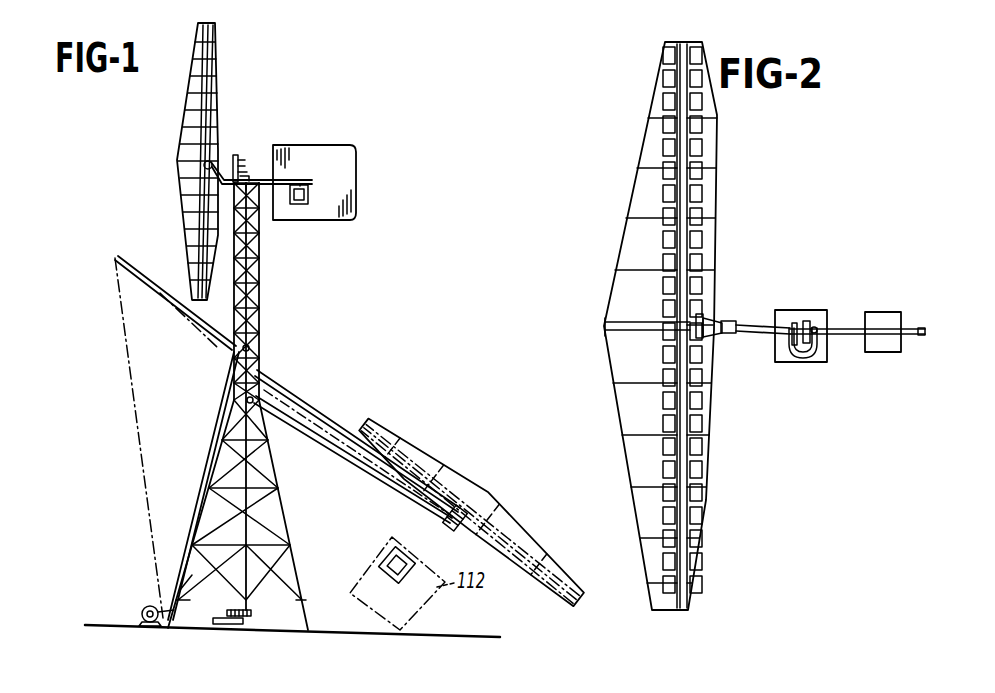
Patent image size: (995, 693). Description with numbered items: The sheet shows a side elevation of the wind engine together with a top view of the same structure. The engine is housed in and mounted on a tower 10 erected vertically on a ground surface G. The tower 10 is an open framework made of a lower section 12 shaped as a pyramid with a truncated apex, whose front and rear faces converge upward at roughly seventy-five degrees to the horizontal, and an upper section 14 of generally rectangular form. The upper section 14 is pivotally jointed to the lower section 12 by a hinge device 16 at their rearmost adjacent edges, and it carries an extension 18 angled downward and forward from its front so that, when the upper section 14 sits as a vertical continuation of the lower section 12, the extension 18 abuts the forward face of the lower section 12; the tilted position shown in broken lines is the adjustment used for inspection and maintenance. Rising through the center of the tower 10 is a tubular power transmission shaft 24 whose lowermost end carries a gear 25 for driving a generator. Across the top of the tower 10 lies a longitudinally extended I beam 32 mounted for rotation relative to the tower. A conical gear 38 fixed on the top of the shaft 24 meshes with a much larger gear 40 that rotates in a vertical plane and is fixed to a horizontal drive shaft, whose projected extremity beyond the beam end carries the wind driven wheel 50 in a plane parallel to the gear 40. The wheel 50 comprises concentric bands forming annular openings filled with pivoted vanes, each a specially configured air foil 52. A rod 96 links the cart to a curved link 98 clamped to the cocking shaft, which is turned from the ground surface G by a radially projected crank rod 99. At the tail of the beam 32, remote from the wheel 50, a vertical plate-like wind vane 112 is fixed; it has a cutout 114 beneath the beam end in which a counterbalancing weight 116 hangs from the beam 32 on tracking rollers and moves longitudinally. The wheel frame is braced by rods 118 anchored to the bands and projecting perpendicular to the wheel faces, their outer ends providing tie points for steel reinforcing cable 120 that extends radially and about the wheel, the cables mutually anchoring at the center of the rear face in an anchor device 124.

In FIG. 1, the tower 10 is at (257, 331).
In FIG. 1, the lower section 12 is at (278, 498).
In FIG. 1, the upper section 14 is at (260, 270).
In FIG. 2, the upper section 14 is at (780, 310).
In FIG. 1, the hinge device 16 is at (262, 400).
In FIG. 1, the extension 18 is at (182, 330).
In FIG. 1, the tubular power transmission shaft 24 is at (260, 348).
In FIG. 1, the gear 25 is at (251, 611).
In FIG. 1, the I beam 32 is at (266, 181).
In FIG. 2, the I beam 32 is at (764, 327).
In FIG. 2, the conical gear 38 is at (813, 323).
In FIG. 1, the gear 40 is at (239, 158).
In FIG. 2, the gear 40 is at (803, 324).
In FIG. 1, the wind driven wheel 50 is at (186, 97).
In FIG. 2, the wind driven wheel 50 is at (632, 127).
In FIG. 2, the air foil 52 is at (672, 80).
In FIG. 2, the rod 96 is at (737, 331).
In FIG. 2, the curved link 98 is at (793, 362).
In FIG. 1, the crank rod 99 is at (222, 630).
In FIG. 1, the wind vane 112 is at (330, 153).
In FIG. 2, the wind vane 112 is at (853, 340).
In FIG. 1, the cutout 114 is at (305, 205).
In FIG. 1, the weight 116 is at (303, 190).
In FIG. 2, the weight 116 is at (883, 318).
In FIG. 2, the rods 118 is at (698, 487).
In FIG. 2, the steel reinforcing cable 120 is at (633, 200).
In FIG. 2, the anchor device 124 is at (692, 310).
In FIG. 1, the ground surface G is at (485, 635).